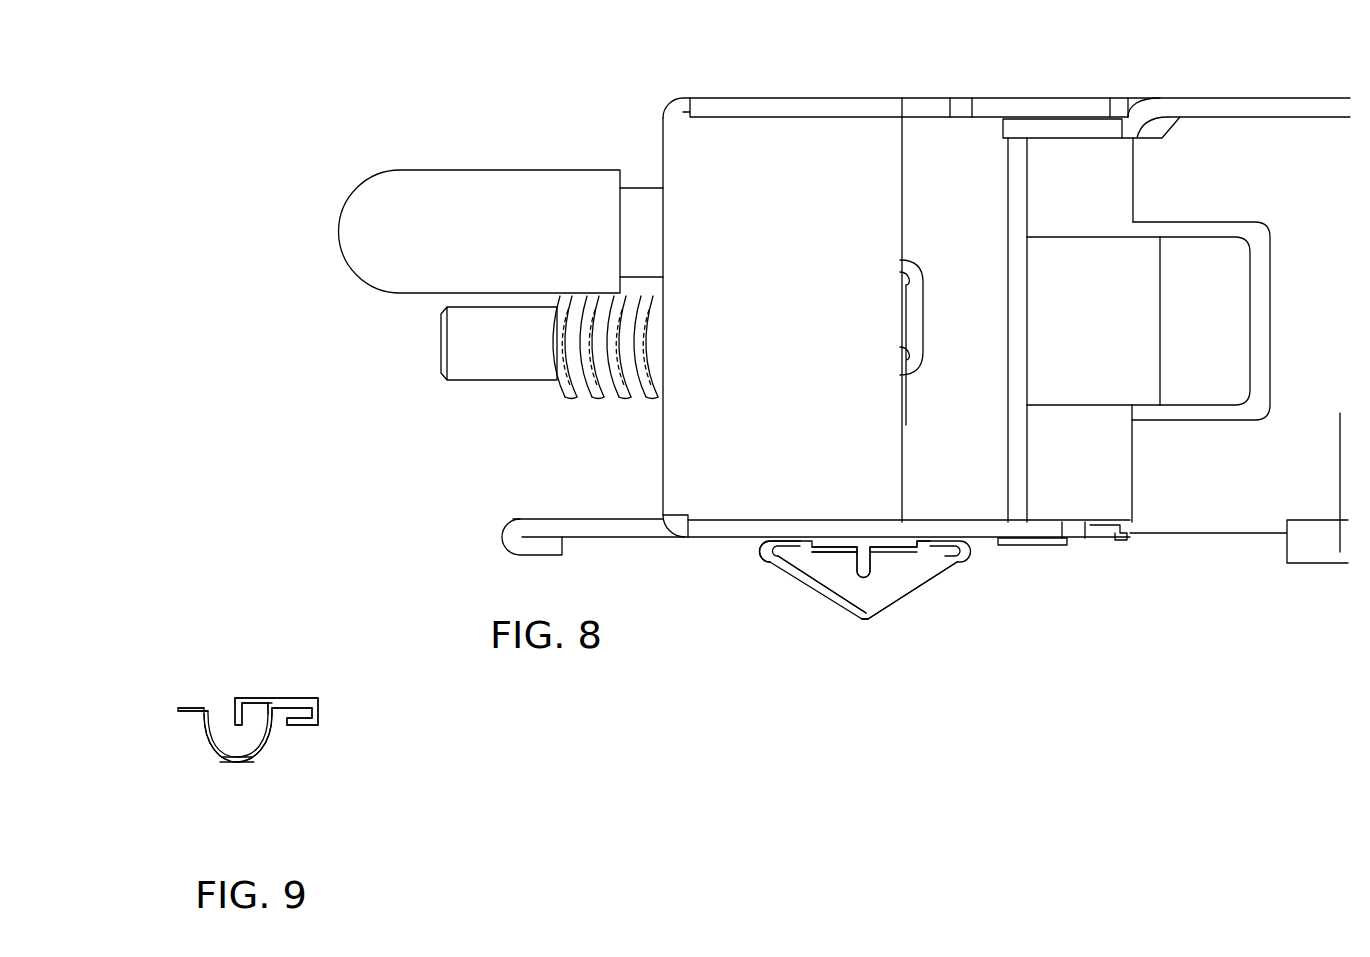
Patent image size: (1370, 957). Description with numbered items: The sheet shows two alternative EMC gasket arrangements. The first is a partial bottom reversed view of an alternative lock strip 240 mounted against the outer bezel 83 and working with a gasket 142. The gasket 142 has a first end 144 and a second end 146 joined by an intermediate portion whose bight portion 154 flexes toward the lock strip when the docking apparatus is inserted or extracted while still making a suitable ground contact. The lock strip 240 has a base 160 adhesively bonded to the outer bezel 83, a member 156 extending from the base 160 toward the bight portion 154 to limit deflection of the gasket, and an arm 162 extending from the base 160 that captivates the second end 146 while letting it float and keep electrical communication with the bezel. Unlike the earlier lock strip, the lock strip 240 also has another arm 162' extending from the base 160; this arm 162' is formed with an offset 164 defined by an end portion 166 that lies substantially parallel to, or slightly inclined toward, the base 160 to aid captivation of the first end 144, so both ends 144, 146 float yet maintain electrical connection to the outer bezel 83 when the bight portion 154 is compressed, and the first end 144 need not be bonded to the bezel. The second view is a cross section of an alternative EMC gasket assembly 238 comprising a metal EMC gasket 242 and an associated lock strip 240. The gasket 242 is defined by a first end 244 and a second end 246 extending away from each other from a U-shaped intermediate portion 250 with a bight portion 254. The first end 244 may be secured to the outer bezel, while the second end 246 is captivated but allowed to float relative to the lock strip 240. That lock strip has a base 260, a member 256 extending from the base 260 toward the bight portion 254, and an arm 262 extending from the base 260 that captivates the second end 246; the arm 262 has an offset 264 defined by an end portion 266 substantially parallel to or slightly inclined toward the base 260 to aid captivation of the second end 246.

In FIG. 8, the outer bezel 83 is at (782, 97).
In FIG. 8, the gasket 142 is at (785, 586).
In FIG. 8, the first end 144 is at (876, 618).
In FIG. 8, the second end 146 is at (959, 564).
In FIG. 8, the bight portion 154 is at (864, 620).
In FIG. 8, the member 156 is at (862, 540).
In FIG. 8, the base 160 is at (892, 540).
In FIG. 8, the arm 162 is at (726, 589).
In FIG. 8, the another arm 162' is at (805, 522).
In FIG. 8, the offset 164 is at (785, 562).
In FIG. 8, the end portion 166 is at (758, 551).
In FIG. 8, the lock strip 240 is at (849, 560).
In FIG. 9, the lock strip 240 is at (252, 697).
In FIG. 9, the EMC gasket assembly 238 is at (169, 732).
In FIG. 9, the metal EMC gasket 242 is at (262, 748).
In FIG. 9, the first end 244 is at (187, 707).
In FIG. 9, the second end 246 is at (283, 729).
In FIG. 9, the intermediate portion 250 is at (228, 760).
In FIG. 9, the bight portion 254 is at (238, 763).
In FIG. 9, the member 256 is at (233, 710).
In FIG. 9, the base 260 is at (275, 697).
In FIG. 9, the arm 262 is at (318, 722).
In FIG. 9, the offset 264 is at (322, 699).
In FIG. 9, the end portion 266 is at (303, 727).